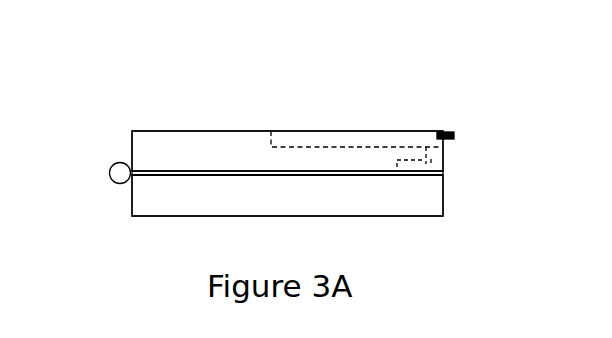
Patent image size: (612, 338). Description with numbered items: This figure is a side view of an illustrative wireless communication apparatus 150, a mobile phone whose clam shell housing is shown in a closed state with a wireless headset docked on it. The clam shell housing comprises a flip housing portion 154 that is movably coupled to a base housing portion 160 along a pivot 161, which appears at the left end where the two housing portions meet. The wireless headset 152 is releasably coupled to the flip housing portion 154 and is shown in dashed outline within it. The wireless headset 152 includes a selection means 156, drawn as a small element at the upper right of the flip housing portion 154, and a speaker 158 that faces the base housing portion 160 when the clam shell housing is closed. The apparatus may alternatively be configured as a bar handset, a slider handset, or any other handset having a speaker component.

The wireless communication apparatus 150 is at (288, 60).
The wireless headset 152 is at (345, 135).
The flip housing portion 154 is at (172, 137).
The selection means 156 is at (449, 132).
The speaker 158 is at (420, 163).
The base housing portion 160 is at (258, 205).
The pivot 161 is at (117, 172).